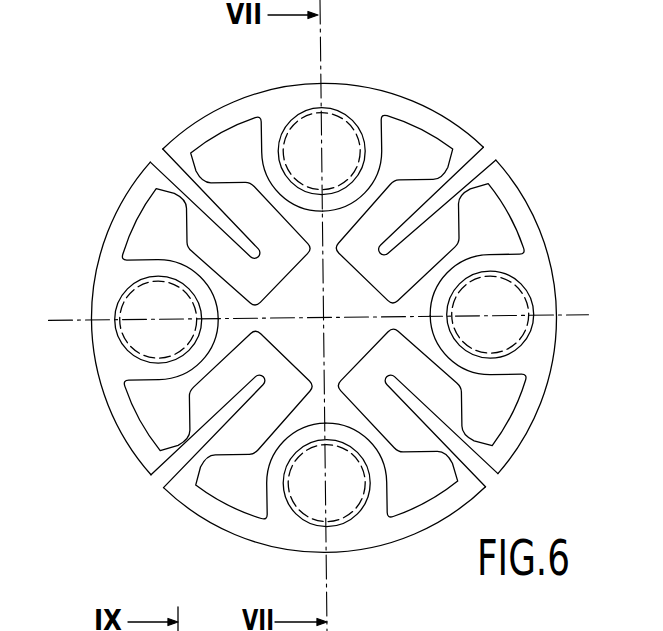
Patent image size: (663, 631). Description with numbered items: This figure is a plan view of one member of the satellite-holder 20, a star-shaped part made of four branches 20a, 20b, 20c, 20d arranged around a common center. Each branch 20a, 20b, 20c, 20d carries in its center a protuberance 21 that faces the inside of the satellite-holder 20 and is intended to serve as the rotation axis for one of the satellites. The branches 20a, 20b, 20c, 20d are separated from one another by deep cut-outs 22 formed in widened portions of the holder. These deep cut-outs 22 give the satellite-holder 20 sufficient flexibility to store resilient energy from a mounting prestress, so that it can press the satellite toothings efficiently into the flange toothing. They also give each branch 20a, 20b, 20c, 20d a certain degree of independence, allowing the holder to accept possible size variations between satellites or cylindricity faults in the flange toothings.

The satellite-holder 20 is at (463, 126).
The branch 20a is at (357, 83).
The branch 20b is at (622, 301).
The branch 20c is at (343, 553).
The branch 20d is at (95, 293).
The protuberance 21 is at (515, 285).
The deep cut-out 22 is at (167, 165).